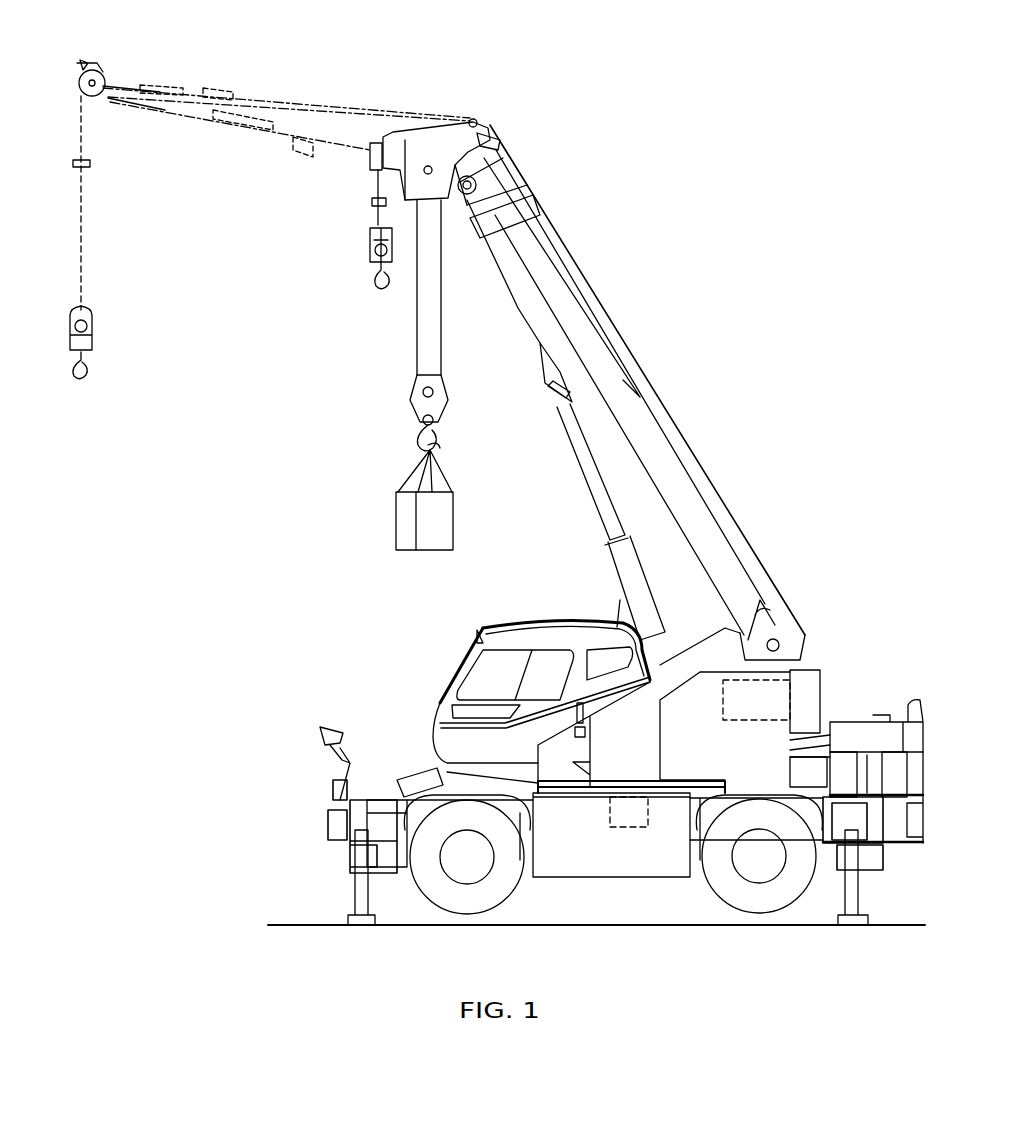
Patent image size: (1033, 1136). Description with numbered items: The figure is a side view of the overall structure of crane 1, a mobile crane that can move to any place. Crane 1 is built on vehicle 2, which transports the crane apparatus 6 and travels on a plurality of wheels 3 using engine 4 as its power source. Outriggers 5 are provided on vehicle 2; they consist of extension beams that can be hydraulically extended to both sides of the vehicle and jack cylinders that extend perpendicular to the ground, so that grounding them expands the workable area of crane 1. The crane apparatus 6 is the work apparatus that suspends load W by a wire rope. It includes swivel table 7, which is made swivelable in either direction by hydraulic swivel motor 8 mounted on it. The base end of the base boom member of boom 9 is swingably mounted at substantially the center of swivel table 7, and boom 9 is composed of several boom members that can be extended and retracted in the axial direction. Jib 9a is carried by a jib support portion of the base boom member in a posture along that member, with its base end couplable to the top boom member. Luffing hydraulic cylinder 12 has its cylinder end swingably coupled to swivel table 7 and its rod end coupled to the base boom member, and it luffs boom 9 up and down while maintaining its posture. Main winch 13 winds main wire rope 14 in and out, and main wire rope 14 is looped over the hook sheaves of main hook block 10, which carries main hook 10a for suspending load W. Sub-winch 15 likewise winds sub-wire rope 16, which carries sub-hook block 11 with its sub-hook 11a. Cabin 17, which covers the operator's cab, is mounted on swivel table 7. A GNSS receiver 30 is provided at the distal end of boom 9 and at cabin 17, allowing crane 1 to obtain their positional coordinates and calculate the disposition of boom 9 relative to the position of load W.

The crane 1 is at (822, 38).
The vehicle 2 is at (278, 802).
The wheels 3 is at (467, 905).
The engine 4 is at (880, 718).
The outriggers 5 is at (355, 878).
The crane apparatus 6 is at (790, 285).
The swivel table 7 is at (563, 793).
The hydraulic swivel motor 8 is at (630, 830).
The boom 9 is at (632, 322).
The jib 9a is at (243, 135).
The main hook block 10 is at (447, 412).
The main hook 10a is at (448, 443).
The sub-hook block 11 is at (370, 238).
The sub-hook 11a is at (370, 274).
The luffing hydraulic cylinder 12 is at (600, 512).
The main winch 13 is at (820, 675).
The main wire rope 14 is at (440, 377).
The sub-winch 15 is at (775, 620).
The sub-wire rope 16 is at (375, 192).
The cabin 17 is at (455, 672).
The GNSS receiver 30 is at (500, 160).
The load W is at (455, 528).